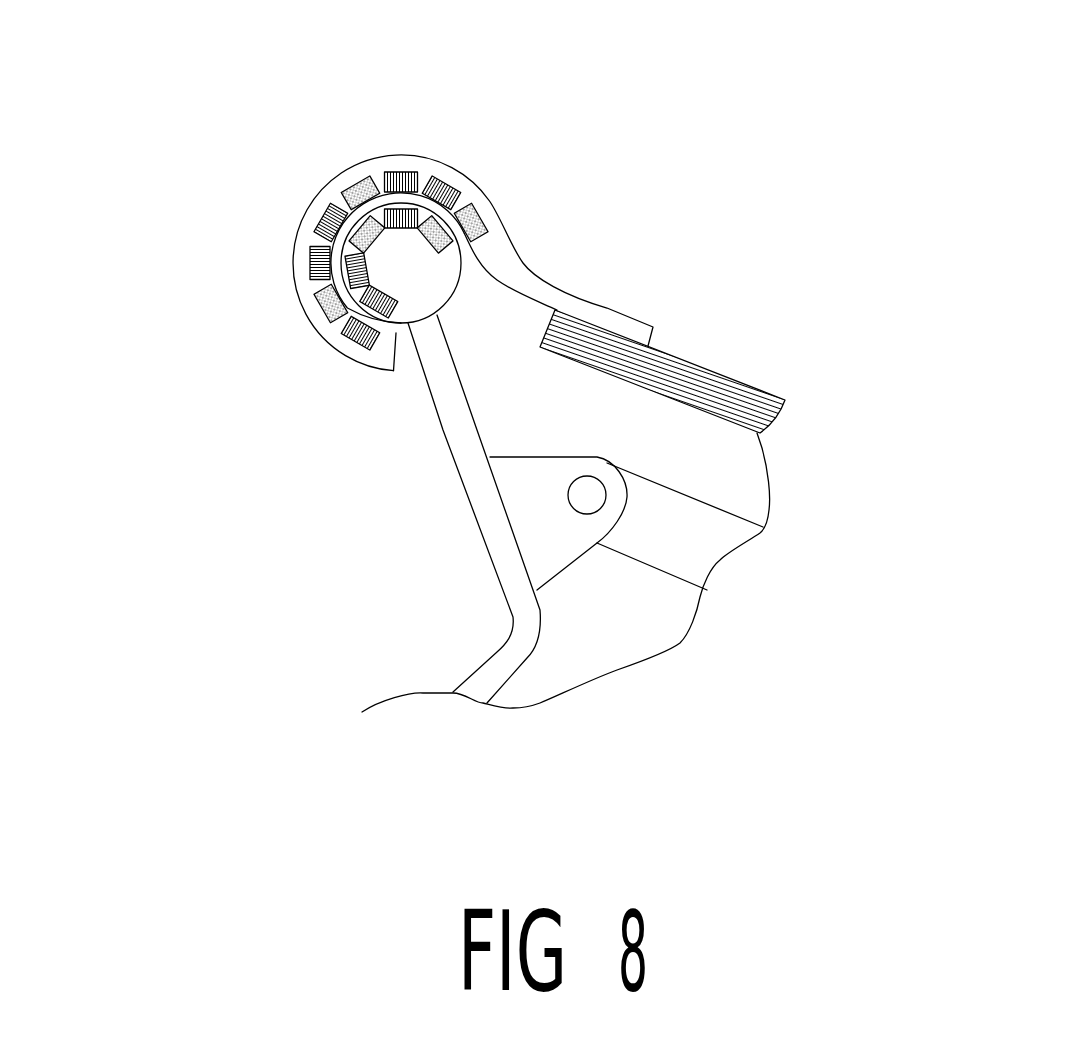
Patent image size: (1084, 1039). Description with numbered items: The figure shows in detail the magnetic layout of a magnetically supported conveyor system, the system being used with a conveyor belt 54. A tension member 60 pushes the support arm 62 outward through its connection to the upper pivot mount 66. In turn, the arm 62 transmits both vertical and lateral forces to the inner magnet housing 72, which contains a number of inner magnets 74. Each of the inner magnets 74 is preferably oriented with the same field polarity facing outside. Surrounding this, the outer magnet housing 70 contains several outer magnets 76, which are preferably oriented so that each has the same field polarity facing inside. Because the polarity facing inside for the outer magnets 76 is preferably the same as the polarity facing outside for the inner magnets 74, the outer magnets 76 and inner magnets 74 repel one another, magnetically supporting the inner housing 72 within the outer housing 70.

The conveyor belt 54 is at (705, 385).
The tension member 60 is at (707, 533).
The support arm 62 is at (513, 577).
The upper pivot mount 66 is at (525, 513).
The outer magnet housing 70 is at (300, 287).
The inner magnet housing 72 is at (405, 253).
The inner magnet 74 is at (407, 207).
The outer magnet 76 is at (468, 223).